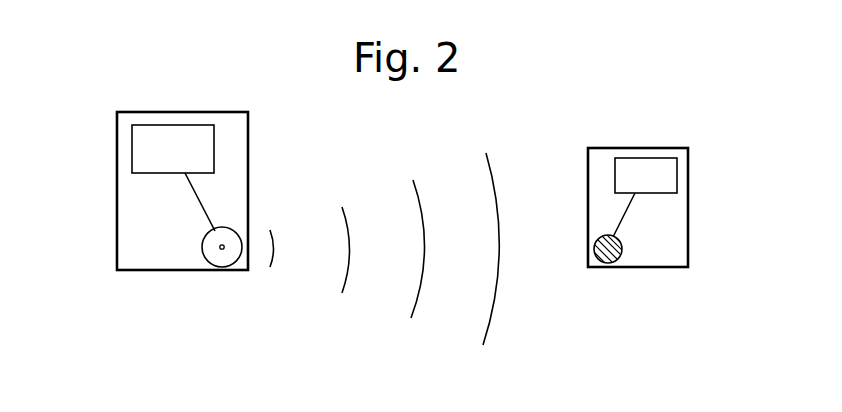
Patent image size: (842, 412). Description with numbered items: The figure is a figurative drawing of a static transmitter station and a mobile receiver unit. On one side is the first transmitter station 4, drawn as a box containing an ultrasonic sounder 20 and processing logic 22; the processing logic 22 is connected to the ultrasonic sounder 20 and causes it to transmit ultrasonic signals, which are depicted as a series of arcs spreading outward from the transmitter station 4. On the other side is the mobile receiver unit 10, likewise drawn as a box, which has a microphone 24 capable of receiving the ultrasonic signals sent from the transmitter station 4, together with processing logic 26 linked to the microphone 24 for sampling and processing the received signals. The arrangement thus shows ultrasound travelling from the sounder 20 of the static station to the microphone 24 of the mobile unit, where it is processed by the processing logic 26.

The first transmitter station 4 is at (117, 215).
The processing logic 22 is at (172, 139).
The ultrasonic sounder 20 is at (224, 263).
The mobile receiver unit 10 is at (688, 241).
The processing logic 26 is at (644, 169).
The microphone 24 is at (603, 262).